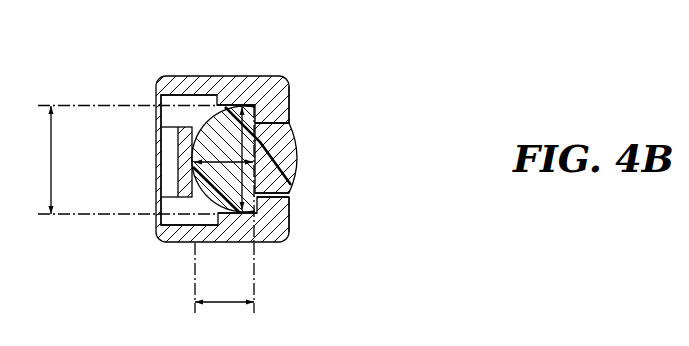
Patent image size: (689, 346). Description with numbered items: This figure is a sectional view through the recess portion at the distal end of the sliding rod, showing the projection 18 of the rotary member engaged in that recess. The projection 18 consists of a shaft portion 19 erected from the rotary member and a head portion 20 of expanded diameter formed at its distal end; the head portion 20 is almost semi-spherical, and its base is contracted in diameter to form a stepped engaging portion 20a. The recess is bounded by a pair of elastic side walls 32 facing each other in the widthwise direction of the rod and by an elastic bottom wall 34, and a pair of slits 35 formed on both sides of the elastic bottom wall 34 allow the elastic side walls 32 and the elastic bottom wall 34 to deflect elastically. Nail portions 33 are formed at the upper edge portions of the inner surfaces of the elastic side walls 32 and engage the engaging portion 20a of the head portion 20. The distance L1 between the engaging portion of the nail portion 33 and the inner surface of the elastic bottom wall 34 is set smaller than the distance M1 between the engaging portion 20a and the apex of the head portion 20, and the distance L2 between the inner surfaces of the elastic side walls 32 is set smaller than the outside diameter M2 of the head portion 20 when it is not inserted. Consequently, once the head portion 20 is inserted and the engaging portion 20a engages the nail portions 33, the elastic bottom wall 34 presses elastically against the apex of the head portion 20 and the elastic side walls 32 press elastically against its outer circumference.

The projection 18 is at (226, 159).
The shaft portion 19 is at (293, 167).
The head portion 20 is at (309, 199).
The engaging portion 20a is at (245, 100).
The elastic side wall 32 is at (217, 92).
The nail portion 33 is at (280, 108).
The elastic bottom wall 34 is at (180, 161).
The slit 35 is at (173, 115).
The distance between engaging portion and apex portion of head portion M1 is at (207, 131).
The outside diameter of head portion M2 is at (292, 124).
The distance between engaging portion of nail portion and inner surface of elastic b L1 is at (224, 289).
The distance between inner surfaces of elastic side walls L2 is at (128, 160).